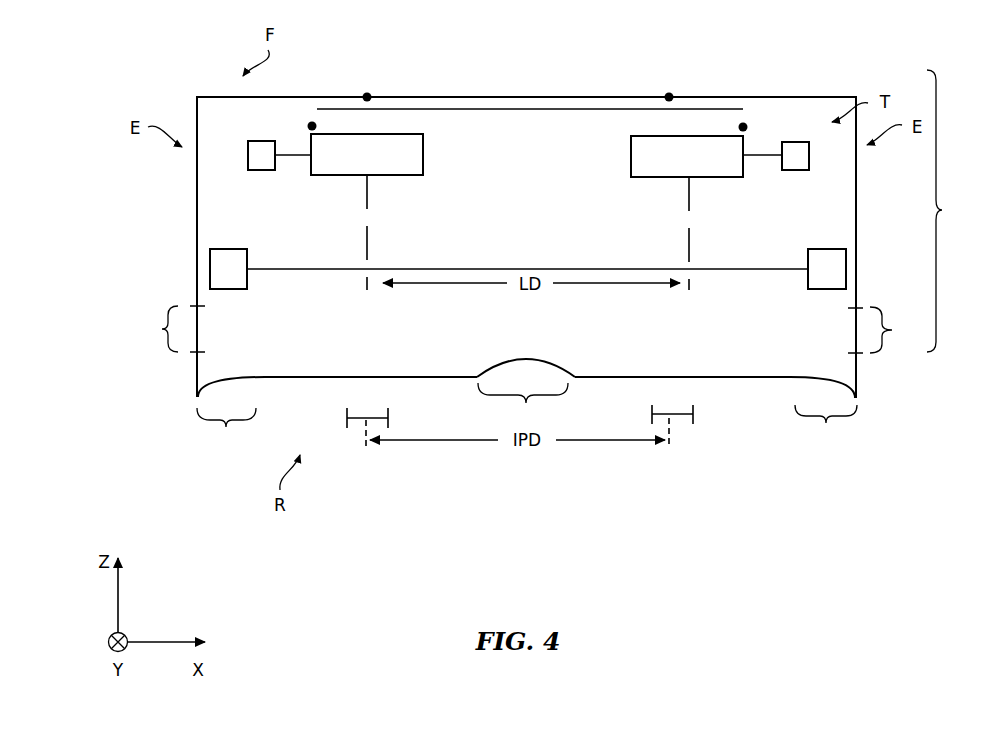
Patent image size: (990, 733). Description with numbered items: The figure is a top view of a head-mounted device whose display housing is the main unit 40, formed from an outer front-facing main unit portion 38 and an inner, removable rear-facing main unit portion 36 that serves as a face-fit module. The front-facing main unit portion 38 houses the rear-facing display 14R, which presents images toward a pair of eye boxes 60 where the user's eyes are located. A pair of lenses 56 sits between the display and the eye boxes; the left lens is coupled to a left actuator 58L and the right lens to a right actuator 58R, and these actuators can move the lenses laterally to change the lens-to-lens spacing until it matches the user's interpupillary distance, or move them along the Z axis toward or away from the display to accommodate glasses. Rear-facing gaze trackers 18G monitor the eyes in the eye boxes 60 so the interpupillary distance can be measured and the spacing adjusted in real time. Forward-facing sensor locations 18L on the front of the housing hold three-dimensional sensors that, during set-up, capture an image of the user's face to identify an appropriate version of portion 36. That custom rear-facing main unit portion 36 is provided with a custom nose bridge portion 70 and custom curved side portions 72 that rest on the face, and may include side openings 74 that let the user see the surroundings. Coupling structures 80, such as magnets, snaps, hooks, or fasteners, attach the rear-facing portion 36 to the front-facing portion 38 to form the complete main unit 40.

The front-facing main unit portion 38 is at (837, 102).
The rear-facing main unit portion 36 is at (783, 367).
The nose bridge portion 70 is at (526, 393).
The rear-facing display 14R is at (522, 108).
The sensor locations 18L is at (367, 94).
The gaze trackers 18G is at (312, 122).
The lenses 56 is at (418, 155).
The left actuator 58L is at (255, 162).
The right actuator 58R is at (803, 157).
The coupling structures 80 is at (214, 262).
The openings 74 is at (525, 329).
The curved side portions 72 is at (527, 430).
The eye boxes 60 is at (390, 412).
The main unit 40 is at (951, 211).